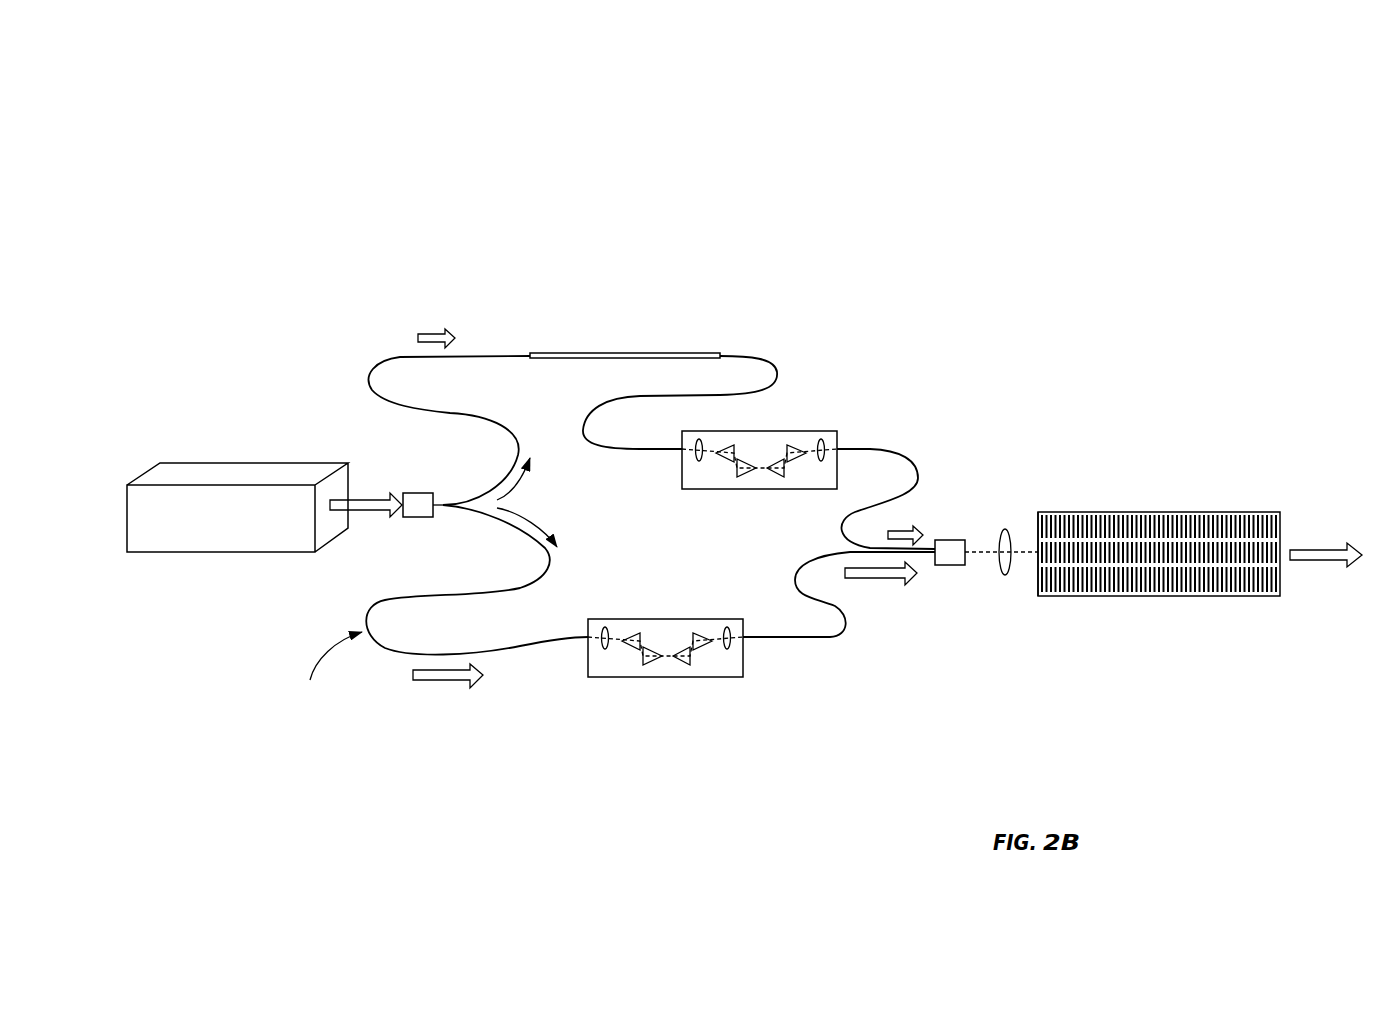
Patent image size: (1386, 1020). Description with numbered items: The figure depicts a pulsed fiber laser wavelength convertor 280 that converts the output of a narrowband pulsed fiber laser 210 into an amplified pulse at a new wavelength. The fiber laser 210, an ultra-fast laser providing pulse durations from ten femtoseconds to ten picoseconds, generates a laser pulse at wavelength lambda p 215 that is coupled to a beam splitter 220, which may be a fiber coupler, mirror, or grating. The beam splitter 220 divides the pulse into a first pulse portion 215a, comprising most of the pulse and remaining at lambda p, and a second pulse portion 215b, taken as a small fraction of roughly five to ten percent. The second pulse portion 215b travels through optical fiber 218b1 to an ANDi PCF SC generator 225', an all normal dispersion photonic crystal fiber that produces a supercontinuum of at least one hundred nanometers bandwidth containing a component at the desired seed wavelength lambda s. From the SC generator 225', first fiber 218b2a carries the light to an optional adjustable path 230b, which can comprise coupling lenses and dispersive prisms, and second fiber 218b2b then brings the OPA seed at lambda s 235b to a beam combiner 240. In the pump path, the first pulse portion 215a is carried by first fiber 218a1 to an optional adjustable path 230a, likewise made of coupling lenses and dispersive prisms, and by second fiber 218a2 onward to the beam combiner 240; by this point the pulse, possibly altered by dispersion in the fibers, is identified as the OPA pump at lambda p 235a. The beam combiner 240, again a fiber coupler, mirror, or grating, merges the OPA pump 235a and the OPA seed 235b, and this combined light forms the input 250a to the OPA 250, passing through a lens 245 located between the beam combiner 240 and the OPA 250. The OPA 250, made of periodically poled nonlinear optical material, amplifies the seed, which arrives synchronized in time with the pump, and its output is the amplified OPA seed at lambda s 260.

The narrowband pulsed fiber laser 210 is at (233, 470).
The laser pulse at wavelength lambda p 215 is at (372, 495).
The first pulse portion 215a is at (547, 527).
The second pulse portion 215b is at (538, 479).
The first fiber 218a1 is at (510, 646).
The second fiber 218a2 is at (777, 637).
The optical fiber 218b1 is at (490, 354).
The first fiber 218b2a is at (752, 353).
The second fiber 218b2b is at (915, 472).
The beam splitter 220 is at (417, 520).
The ANDi PCF SC generator 225' is at (615, 303).
The adjustable path 230a is at (667, 680).
The adjustable path 230b is at (798, 432).
The OPA pump at wavelength lambda p 235a is at (888, 587).
The OPA seed at wavelength lambda s 235b is at (905, 528).
The beam combiner 240 is at (950, 567).
The lens 245 is at (1005, 578).
The OPA 250 is at (1148, 607).
The input to the OPA 250a is at (1038, 555).
The amplified OPA seed at wavelength lambda s 260 is at (1319, 546).
The pulsed fiber laser wavelength convertor 280 is at (1051, 232).